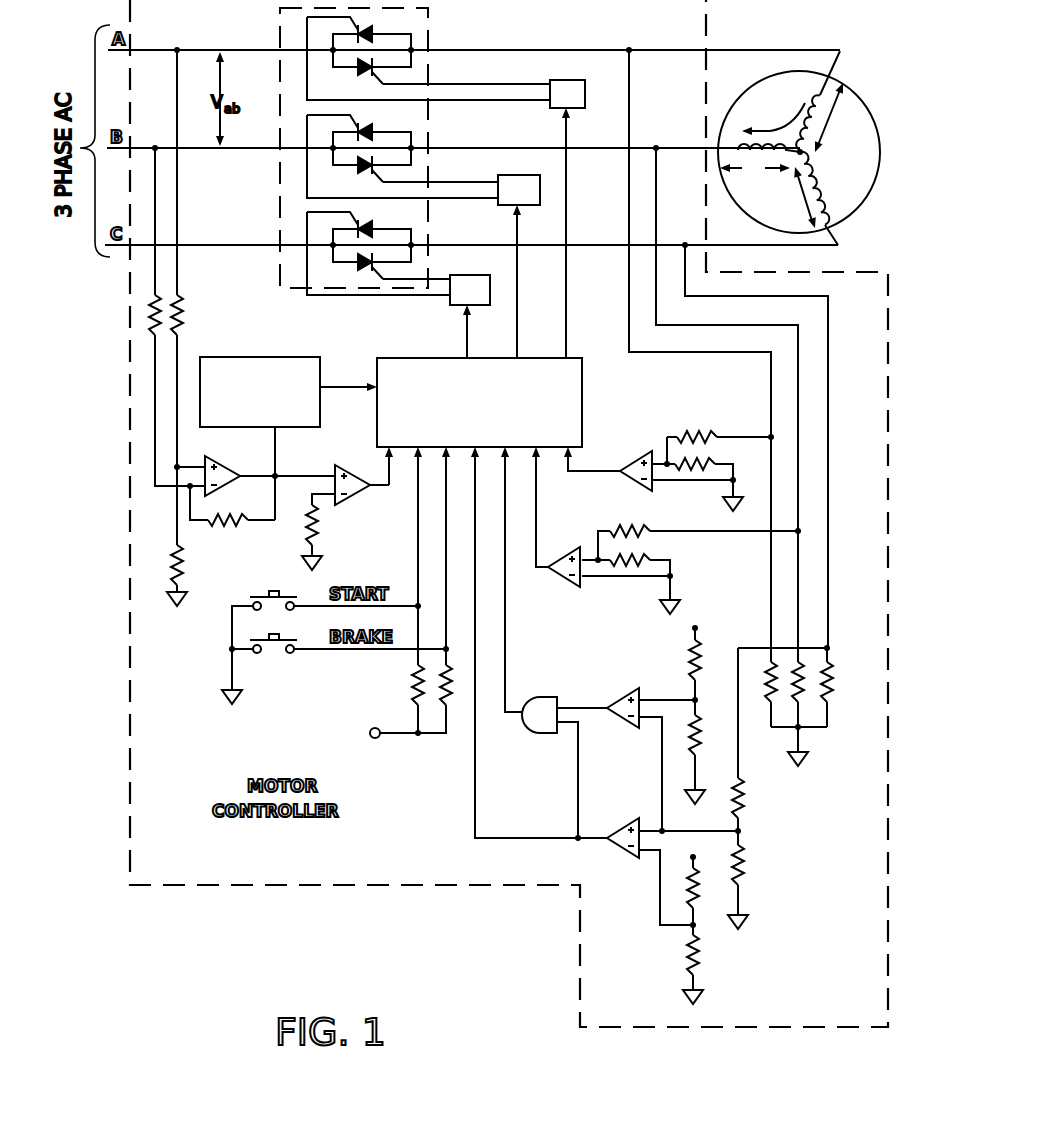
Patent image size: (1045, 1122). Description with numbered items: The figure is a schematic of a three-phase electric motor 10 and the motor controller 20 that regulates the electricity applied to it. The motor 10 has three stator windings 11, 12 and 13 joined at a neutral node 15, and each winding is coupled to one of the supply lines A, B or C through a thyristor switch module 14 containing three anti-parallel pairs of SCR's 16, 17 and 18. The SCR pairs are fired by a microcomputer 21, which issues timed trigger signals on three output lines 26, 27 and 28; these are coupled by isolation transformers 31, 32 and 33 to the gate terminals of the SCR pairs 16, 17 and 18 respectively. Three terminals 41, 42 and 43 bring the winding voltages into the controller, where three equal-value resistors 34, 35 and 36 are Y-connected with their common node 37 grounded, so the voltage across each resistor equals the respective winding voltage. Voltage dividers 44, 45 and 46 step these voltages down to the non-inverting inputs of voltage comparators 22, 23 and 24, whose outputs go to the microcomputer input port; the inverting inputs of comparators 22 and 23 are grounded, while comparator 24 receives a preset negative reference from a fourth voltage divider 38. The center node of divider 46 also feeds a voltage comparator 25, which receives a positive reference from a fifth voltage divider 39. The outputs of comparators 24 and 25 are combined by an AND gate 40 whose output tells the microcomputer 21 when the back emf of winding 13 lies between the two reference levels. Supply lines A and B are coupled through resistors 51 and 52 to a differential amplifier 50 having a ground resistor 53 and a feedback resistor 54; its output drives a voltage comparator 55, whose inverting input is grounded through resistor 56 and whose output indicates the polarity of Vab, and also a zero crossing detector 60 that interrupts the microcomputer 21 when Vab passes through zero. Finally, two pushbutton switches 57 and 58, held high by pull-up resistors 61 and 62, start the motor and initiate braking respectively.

The three-phase electric motor 10 is at (799, 134).
The stator winding 11 is at (818, 96).
The stator winding 12 is at (740, 149).
The stator winding 13 is at (826, 196).
The thyristor switch module 14 is at (415, 28).
The neutral node 15 is at (793, 176).
The first pair of SCR's 16 is at (333, 45).
The second pair of SCR's 17 is at (333, 145).
The third pair of SCR's 18 is at (333, 242).
The motor controller 20 is at (128, 676).
The microcomputer 21 is at (398, 368).
The voltage comparator 22 is at (625, 468).
The voltage comparator 23 is at (560, 560).
The voltage comparator 24 is at (625, 820).
The voltage comparator 25 is at (625, 688).
The first output line 26 is at (566, 350).
The trigger signal output line 27 is at (517, 342).
The trigger signal output line 28 is at (467, 342).
The first isolation transformer 31 is at (566, 86).
The isolation transformer 32 is at (515, 187).
The isolation transformer 33 is at (467, 287).
The resistor 34 is at (770, 706).
The resistor 35 is at (801, 706).
The resistor 36 is at (830, 672).
The common node 37 is at (801, 729).
The fourth voltage divider 38 is at (700, 928).
The fifth voltage divider 39 is at (688, 697).
The AND gate 40 is at (545, 735).
The terminal 41 is at (629, 50).
The terminal 42 is at (656, 148).
The terminal 43 is at (685, 245).
The voltage divider 44 is at (680, 447).
The voltage divider 45 is at (646, 547).
The third voltage divider 46 is at (745, 822).
The differential amplifier 50 is at (226, 470).
The resistor 51 is at (182, 302).
The resistor 52 is at (151, 302).
The resistor 53 is at (183, 572).
The feedback resistor 54 is at (222, 530).
The voltage comparator 55 is at (362, 478).
The resistor 56 is at (316, 526).
The first switch 57 is at (273, 612).
The second switch 58 is at (272, 655).
The zero crossing detector 60 is at (272, 357).
The pull-up resistor 61 is at (412, 680).
The pull-up resistor 62 is at (456, 710).